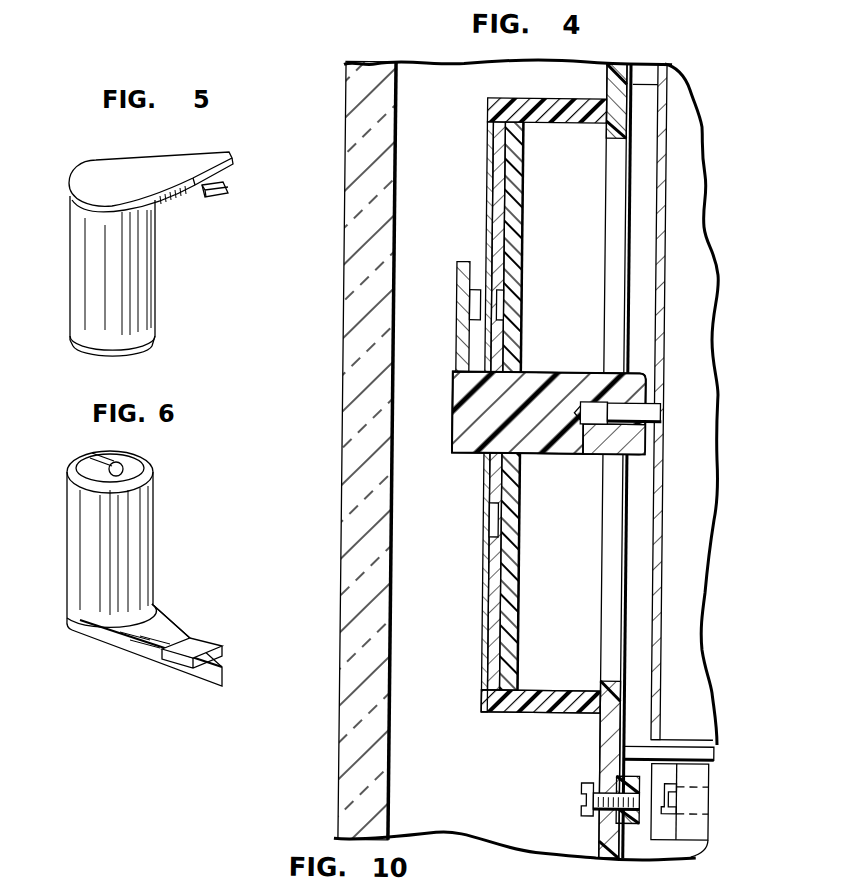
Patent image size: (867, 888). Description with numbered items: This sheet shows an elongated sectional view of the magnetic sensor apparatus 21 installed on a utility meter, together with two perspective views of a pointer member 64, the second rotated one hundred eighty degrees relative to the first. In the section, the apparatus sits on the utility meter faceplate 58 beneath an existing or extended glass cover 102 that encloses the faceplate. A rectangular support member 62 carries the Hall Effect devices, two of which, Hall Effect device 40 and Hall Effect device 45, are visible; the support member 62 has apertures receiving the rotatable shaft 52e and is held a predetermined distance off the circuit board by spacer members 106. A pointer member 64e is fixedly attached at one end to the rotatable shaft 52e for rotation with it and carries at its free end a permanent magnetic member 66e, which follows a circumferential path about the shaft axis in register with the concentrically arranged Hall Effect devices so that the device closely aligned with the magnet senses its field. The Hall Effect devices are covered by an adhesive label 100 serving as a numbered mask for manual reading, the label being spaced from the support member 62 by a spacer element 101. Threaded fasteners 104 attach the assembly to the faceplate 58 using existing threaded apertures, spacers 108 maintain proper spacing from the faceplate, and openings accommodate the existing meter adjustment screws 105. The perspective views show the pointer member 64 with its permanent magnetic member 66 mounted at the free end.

In FIG. 4, the magnetic sensor apparatus 21 is at (328, 455).
In FIG. 4, the glass cover 102 is at (350, 393).
In FIG. 4, the utility meter faceplate 58 is at (662, 128).
In FIG. 4, the rectangular support member 62 is at (521, 633).
In FIG. 4, the spacer member 106 is at (537, 712).
In FIG. 4, the adhesive label 100 is at (483, 622).
In FIG. 4, the spacer element 101 is at (491, 703).
In FIG. 4, the Hall Effect device 40 is at (503, 310).
In FIG. 4, the Hall Effect device 45 is at (497, 512).
In FIG. 4, the pointer member 64e is at (459, 346).
In FIG. 4, the permanent magnetic member 66e is at (470, 297).
In FIG. 4, the rotatable shaft 52e is at (613, 427).
In FIG. 4, the threaded fastener 104 is at (585, 806).
In FIG. 4, the spacer 108 is at (640, 825).
In FIG. 4, the meter adjustment screw 105 is at (672, 840).
In FIG. 5, the pointer member 64 is at (153, 165).
In FIG. 6, the pointer member 64 is at (146, 656).
In FIG. 5, the permanent magnetic member 66 is at (217, 200).
In FIG. 6, the permanent magnetic member 66 is at (203, 640).